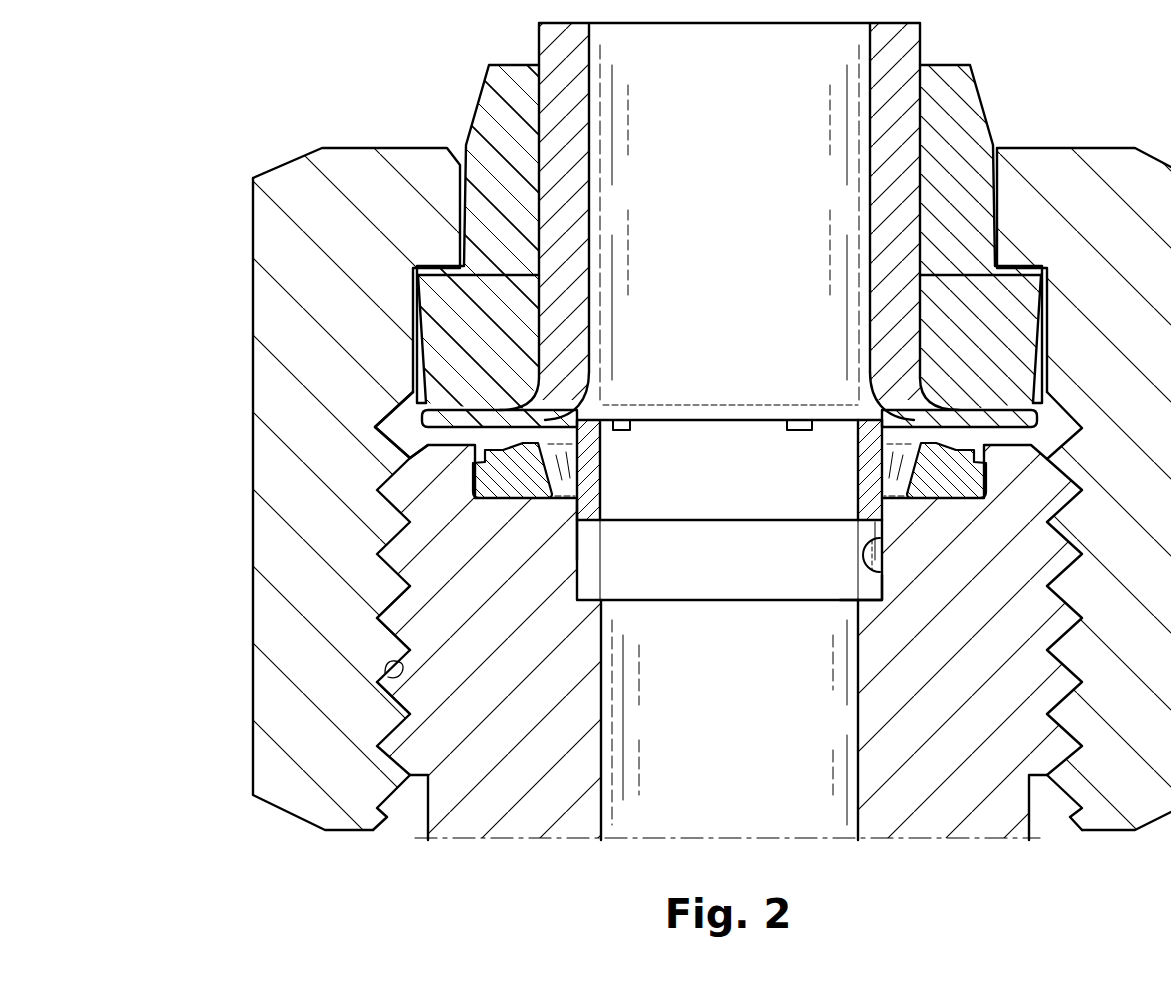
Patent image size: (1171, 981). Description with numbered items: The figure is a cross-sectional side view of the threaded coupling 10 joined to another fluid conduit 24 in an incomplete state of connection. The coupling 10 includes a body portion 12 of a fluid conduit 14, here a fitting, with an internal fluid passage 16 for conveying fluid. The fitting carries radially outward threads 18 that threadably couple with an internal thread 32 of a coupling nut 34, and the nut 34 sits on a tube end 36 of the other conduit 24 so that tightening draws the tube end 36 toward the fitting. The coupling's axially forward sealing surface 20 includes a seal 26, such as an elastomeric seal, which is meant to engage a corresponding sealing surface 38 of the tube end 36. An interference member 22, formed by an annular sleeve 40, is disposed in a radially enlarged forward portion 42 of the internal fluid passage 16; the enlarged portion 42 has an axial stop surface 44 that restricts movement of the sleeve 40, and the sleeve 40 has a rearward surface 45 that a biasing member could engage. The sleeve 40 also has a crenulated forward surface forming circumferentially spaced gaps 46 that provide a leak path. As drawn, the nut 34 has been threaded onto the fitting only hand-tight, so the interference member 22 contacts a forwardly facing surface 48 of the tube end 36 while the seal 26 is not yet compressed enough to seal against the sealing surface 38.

The threaded coupling 10 is at (368, 447).
The body portion 12 is at (455, 545).
The fluid conduit 14 is at (366, 577).
The internal fluid passage 16 is at (824, 826).
The threads 18 is at (387, 632).
The sealing surface 20 is at (925, 440).
The interference member 22 is at (565, 412).
The fluid conduit 24 is at (436, 78).
The seal 26 is at (948, 499).
The internal thread 32 is at (385, 673).
The coupling nut 34 is at (292, 745).
The tube end 36 is at (970, 238).
The sealing surface 38 is at (903, 430).
The annular sleeve 40 is at (601, 420).
The radially enlarged forward portion 42 is at (880, 576).
The axial stop surface 44 is at (880, 592).
The rearward surface 45 is at (577, 526).
The gaps 46 is at (799, 420).
The forwardly facing surface 48 is at (862, 423).